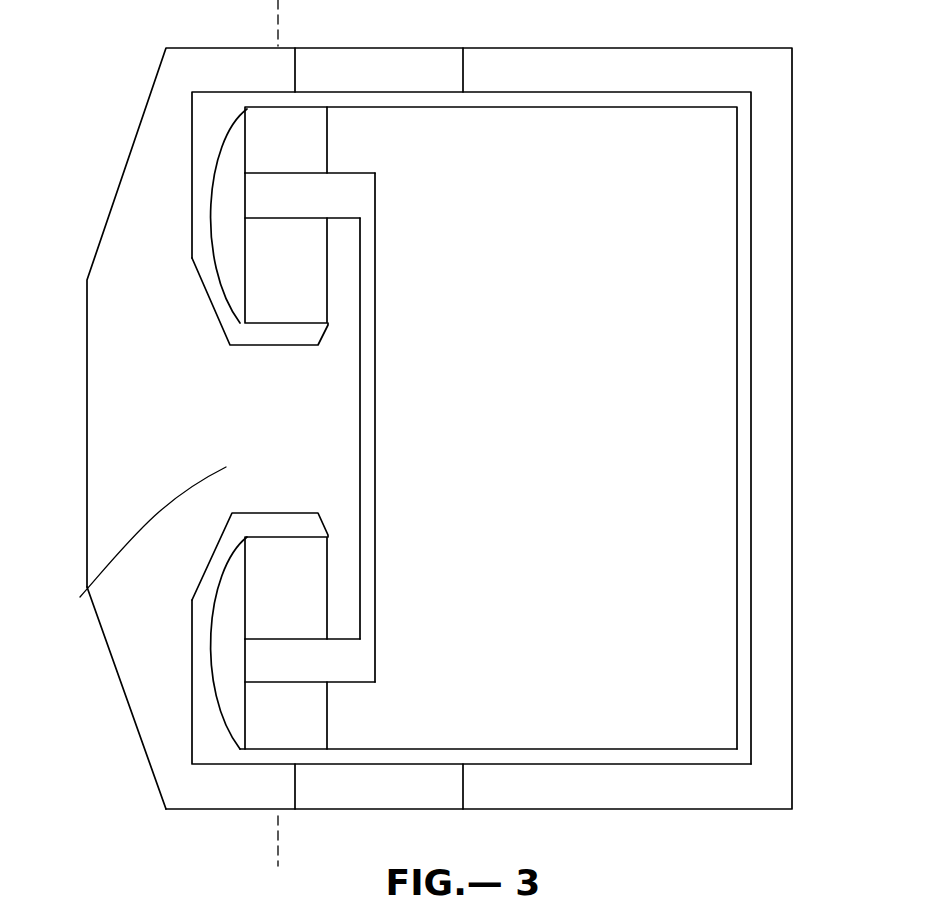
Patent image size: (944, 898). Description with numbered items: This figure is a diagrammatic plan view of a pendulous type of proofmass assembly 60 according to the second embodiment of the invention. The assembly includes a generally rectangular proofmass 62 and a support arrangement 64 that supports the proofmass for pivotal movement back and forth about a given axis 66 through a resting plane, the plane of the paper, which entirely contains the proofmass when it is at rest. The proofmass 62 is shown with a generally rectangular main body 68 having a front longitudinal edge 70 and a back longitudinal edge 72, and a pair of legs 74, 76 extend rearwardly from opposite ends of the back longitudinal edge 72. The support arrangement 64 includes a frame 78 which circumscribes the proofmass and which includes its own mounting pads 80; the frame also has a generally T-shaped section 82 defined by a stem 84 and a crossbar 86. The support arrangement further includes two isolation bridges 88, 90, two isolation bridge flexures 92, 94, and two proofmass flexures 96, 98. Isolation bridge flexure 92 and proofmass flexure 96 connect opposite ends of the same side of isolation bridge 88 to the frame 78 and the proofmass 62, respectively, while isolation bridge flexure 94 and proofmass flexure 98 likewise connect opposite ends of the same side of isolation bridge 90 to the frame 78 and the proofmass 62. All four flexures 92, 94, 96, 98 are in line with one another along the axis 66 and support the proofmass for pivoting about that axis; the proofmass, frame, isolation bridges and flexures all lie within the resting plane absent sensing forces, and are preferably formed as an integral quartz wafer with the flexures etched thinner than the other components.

The proofmass assembly 60 is at (92, 176).
The proofmass 62 is at (749, 276).
The support arrangement 64 is at (125, 750).
The axis 66 is at (281, 837).
The main body 68 is at (562, 728).
The front longitudinal edge 70 is at (739, 605).
The back longitudinal edge 72 is at (368, 581).
The leg 74 is at (343, 143).
The leg 76 is at (342, 718).
The frame 78 is at (692, 798).
The mounting pads 80 is at (428, 63).
The T-shaped section 82 is at (144, 535).
The stem 84 is at (260, 488).
The crossbar 86 is at (333, 337).
The isolation bridge 88 is at (227, 198).
The isolation bridge 90 is at (227, 648).
The isolation bridge flexure 92 is at (270, 277).
The isolation bridge flexure 94 is at (296, 557).
The proofmass flexure 96 is at (297, 124).
The proofmass flexure 98 is at (272, 738).